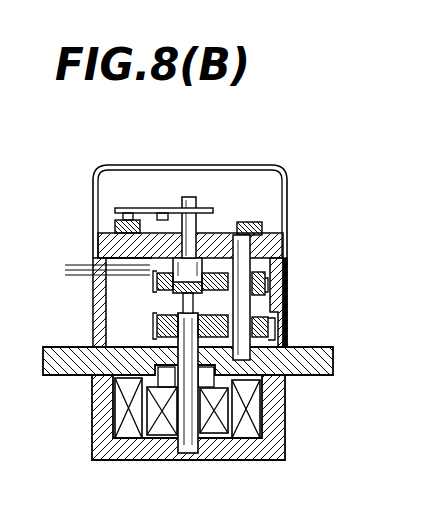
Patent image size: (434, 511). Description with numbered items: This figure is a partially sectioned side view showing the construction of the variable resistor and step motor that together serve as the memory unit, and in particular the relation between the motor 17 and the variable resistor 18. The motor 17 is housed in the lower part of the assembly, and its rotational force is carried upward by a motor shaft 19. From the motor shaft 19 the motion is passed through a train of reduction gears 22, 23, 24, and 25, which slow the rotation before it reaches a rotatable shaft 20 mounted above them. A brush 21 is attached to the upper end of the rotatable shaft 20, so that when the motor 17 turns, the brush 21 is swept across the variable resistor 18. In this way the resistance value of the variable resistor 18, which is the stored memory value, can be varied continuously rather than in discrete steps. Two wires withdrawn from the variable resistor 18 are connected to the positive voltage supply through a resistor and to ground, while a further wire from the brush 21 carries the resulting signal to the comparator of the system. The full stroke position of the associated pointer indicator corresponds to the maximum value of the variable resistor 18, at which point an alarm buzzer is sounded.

The motor 17 is at (217, 408).
The variable resistor 18 is at (120, 229).
The motor shaft 19 is at (184, 448).
The rotatable shaft 20 is at (189, 199).
The brush 21 is at (212, 209).
The reduction gear 22 is at (150, 282).
The reduction gear 23 is at (266, 283).
The reduction gear 24 is at (155, 326).
The reduction gear 25 is at (272, 329).